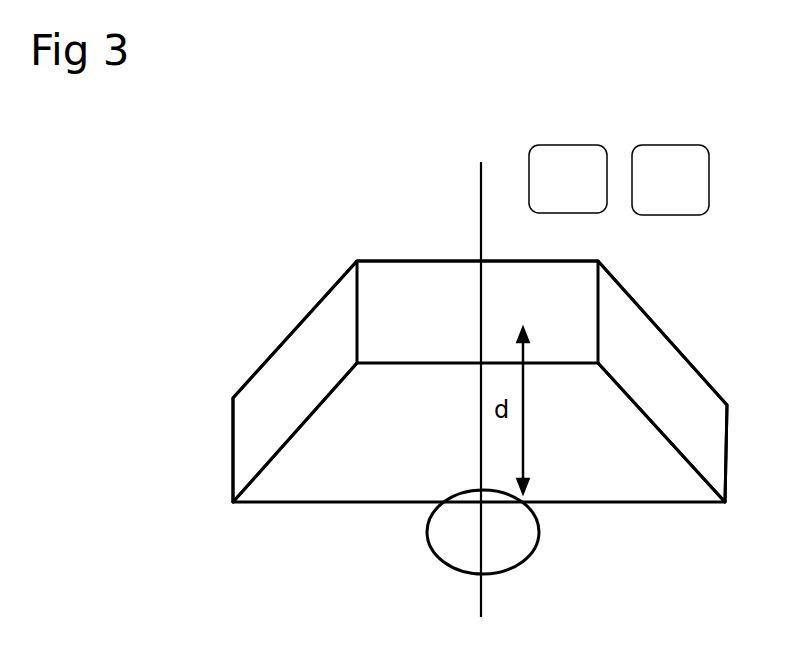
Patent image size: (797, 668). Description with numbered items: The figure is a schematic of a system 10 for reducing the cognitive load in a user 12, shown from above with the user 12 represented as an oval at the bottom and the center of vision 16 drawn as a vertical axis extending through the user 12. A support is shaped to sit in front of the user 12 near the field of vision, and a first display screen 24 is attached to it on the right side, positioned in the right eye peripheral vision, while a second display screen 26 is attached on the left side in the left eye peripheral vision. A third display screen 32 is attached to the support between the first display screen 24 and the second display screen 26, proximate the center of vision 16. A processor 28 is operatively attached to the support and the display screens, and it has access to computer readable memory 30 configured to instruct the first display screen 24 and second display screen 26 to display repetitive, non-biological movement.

The system 10 is at (252, 189).
The user 12 is at (417, 566).
The center of vision 16 is at (497, 592).
The first display screen 24 is at (693, 344).
The second display screen 26 is at (276, 324).
The processor 28 is at (568, 179).
The computer readable memory 30 is at (670, 180).
The third display screen 32 is at (383, 244).